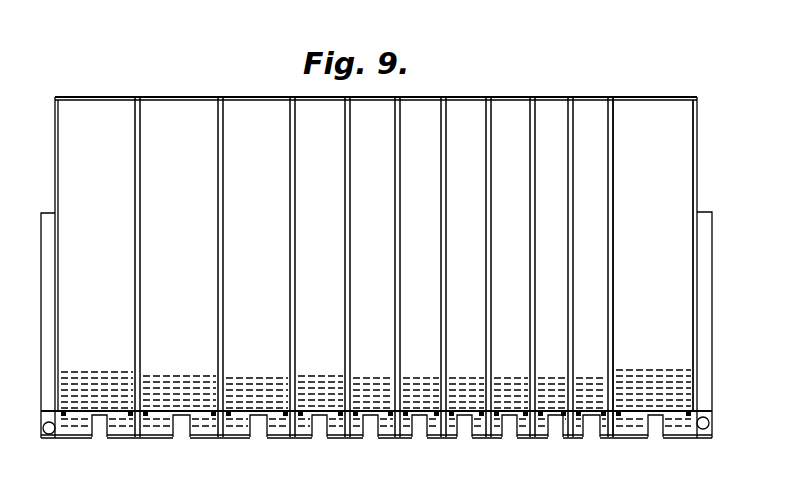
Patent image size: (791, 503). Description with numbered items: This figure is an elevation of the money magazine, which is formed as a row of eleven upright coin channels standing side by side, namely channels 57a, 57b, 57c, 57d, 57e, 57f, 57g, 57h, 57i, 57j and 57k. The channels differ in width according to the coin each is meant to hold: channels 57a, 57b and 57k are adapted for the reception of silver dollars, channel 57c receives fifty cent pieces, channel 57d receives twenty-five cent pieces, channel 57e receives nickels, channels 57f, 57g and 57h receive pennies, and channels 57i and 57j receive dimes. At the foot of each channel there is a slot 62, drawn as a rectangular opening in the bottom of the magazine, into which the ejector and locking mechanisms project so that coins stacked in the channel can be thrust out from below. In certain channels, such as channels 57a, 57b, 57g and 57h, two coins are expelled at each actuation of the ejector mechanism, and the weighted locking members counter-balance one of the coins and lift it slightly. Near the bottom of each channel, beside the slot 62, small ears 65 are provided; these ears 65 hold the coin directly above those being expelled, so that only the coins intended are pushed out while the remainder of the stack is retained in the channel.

The channel 57a is at (100, 267).
The channel 57b is at (183, 267).
The channel 57c is at (260, 267).
The channel 57d is at (324, 267).
The channel 57e is at (376, 267).
The channel 57f is at (424, 267).
The channel 57g is at (470, 267).
The channel 57h is at (514, 267).
The channel 57i is at (555, 267).
The channel 57j is at (594, 267).
The channel 57k is at (653, 267).
The slot 62 is at (182, 428).
The ears 65 is at (130, 417).